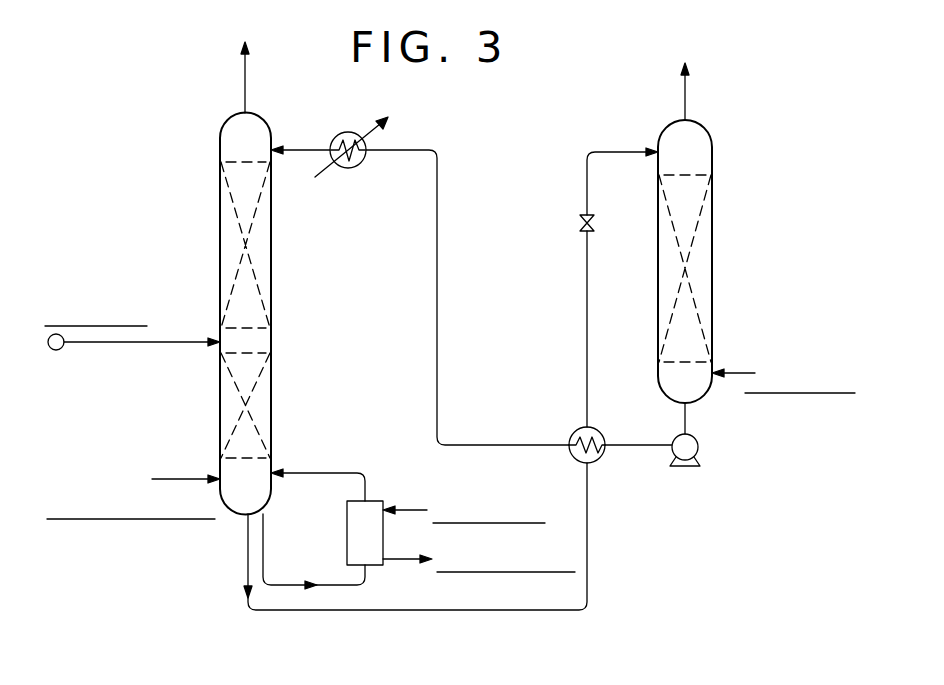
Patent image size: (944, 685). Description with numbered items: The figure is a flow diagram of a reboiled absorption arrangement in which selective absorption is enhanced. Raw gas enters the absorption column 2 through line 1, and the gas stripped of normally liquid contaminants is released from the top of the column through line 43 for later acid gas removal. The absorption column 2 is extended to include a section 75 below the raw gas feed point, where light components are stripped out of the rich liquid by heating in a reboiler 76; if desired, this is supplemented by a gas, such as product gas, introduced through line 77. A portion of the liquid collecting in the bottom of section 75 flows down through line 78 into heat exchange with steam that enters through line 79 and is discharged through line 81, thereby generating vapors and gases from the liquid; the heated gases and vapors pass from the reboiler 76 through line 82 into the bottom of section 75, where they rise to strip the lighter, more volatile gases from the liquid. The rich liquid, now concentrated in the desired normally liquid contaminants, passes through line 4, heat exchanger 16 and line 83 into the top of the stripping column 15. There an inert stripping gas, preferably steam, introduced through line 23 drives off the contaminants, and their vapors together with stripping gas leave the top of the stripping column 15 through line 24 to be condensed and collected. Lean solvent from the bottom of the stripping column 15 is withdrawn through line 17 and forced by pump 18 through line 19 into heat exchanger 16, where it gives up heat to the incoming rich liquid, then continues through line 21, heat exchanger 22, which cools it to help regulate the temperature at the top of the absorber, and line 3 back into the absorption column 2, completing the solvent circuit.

The raw gas feed line 1 is at (153, 338).
The absorption column 2 is at (220, 262).
The lean solvent line 3 is at (303, 150).
The rich liquid line 4 is at (490, 610).
The stripping column 15 is at (712, 247).
The heat exchanger 16 is at (600, 432).
The lean solvent withdrawal line 17 is at (689, 424).
The pump 18 is at (692, 447).
The pump discharge line 19 is at (634, 445).
The lean solvent line 21 is at (437, 185).
The heat exchanger 22 is at (350, 133).
The stripping gas inlet line 23 is at (742, 373).
The stripping column overhead line 24 is at (685, 100).
The absorber overhead line 43 is at (245, 81).
The reboiled section 75 is at (271, 385).
The reboiler 76 is at (355, 518).
The supplemental gas inlet line 77 is at (165, 478).
The liquid draw-off line 78 is at (263, 540).
The steam inlet line 79 is at (405, 510).
The steam discharge line 81 is at (400, 560).
The vapor return line 82 is at (322, 470).
The rich liquid feed line 83 is at (586, 258).